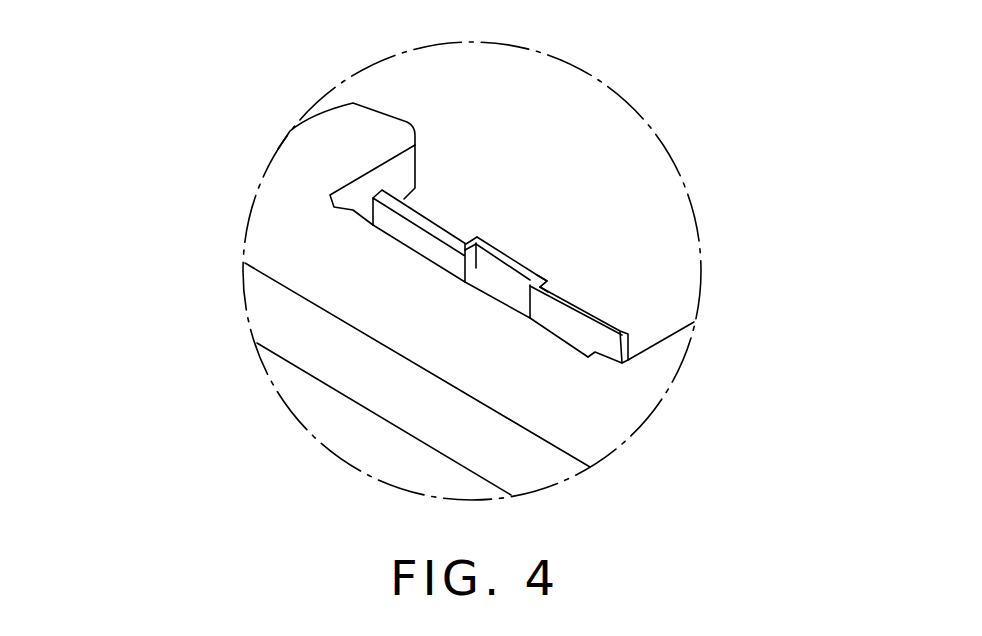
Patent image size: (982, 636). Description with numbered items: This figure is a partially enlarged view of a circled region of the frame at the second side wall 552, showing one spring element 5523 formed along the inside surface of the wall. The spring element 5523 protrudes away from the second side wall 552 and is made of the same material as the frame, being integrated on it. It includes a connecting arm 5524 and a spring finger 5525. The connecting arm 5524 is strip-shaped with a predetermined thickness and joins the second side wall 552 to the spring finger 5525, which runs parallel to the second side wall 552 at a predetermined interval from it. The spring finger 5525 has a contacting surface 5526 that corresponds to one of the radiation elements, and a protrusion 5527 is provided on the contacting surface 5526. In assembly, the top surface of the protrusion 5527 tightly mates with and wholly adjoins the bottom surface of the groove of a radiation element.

The second side wall 552 is at (373, 283).
The spring element 5523 is at (605, 185).
The connecting arm 5524 is at (423, 253).
The spring finger 5525 is at (592, 320).
The contacting surface 5526 is at (506, 242).
The protrusion 5527 is at (543, 285).